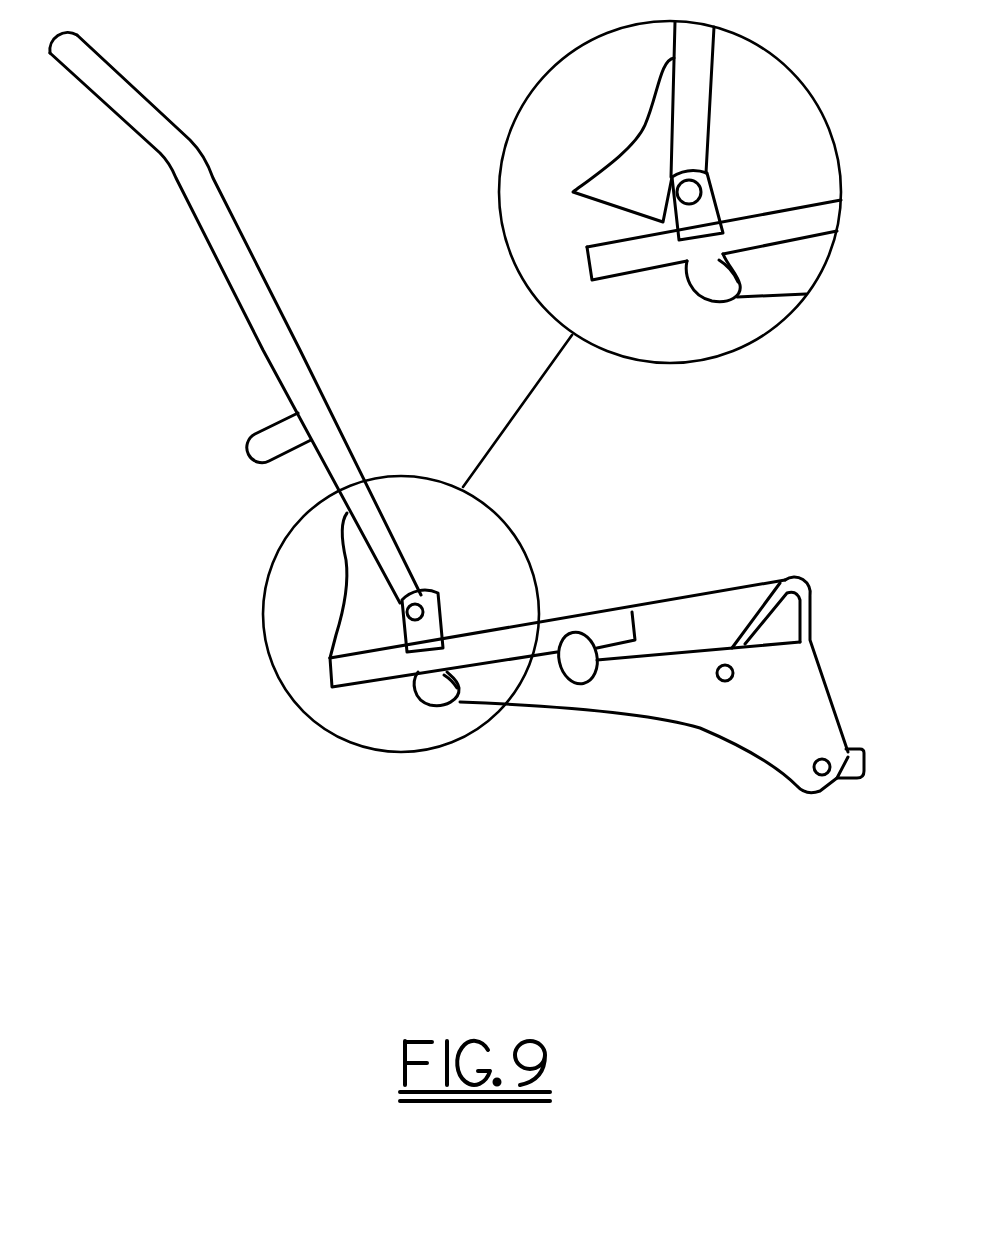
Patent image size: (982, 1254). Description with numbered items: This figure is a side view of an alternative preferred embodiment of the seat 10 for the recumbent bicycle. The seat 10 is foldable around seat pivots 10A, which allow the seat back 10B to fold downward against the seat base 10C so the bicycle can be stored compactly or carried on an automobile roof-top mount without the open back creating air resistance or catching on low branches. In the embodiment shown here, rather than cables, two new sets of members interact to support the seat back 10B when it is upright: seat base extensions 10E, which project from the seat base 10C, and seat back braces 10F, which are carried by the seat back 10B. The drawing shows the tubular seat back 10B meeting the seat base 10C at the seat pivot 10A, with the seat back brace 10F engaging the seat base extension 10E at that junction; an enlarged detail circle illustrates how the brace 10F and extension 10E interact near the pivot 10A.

The seat 10 is at (146, 264).
The seat pivots 10A is at (422, 608).
The seat back 10B is at (245, 253).
The seat base 10C is at (810, 612).
The seat base extensions 10E is at (357, 673).
The seat back braces 10F is at (357, 612).